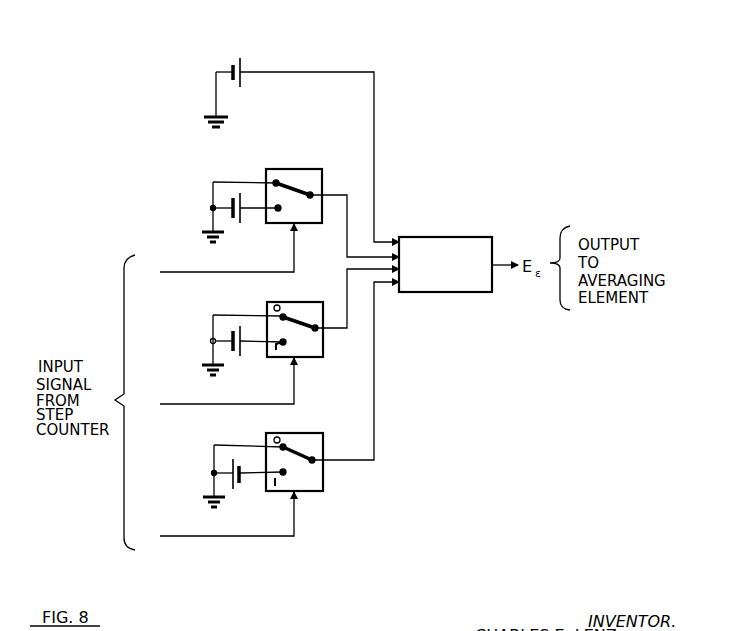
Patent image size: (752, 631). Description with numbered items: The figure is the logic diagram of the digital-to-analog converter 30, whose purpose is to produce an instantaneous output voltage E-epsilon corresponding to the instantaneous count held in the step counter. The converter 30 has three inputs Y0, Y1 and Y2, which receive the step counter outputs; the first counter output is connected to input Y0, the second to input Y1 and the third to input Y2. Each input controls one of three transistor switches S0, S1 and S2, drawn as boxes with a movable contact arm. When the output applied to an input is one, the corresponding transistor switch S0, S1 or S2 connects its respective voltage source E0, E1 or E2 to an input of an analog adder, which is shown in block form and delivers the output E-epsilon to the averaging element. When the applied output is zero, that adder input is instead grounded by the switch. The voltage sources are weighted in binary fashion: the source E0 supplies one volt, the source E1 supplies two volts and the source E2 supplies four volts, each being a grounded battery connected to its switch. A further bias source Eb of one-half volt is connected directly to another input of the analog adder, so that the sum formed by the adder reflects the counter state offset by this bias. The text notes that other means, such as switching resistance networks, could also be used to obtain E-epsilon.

The digital-to-analog converter 30 is at (433, 165).
The transistor switch S0 is at (294, 186).
The transistor switch S1 is at (295, 320).
The transistor switch S2 is at (294, 453).
The converter input Y0 is at (212, 255).
The converter input Y1 is at (216, 388).
The converter input Y2 is at (216, 521).
The voltage source E0 is at (249, 195).
The voltage source E1 is at (248, 329).
The voltage source E2 is at (216, 464).
The bias voltage source Eb is at (262, 62).